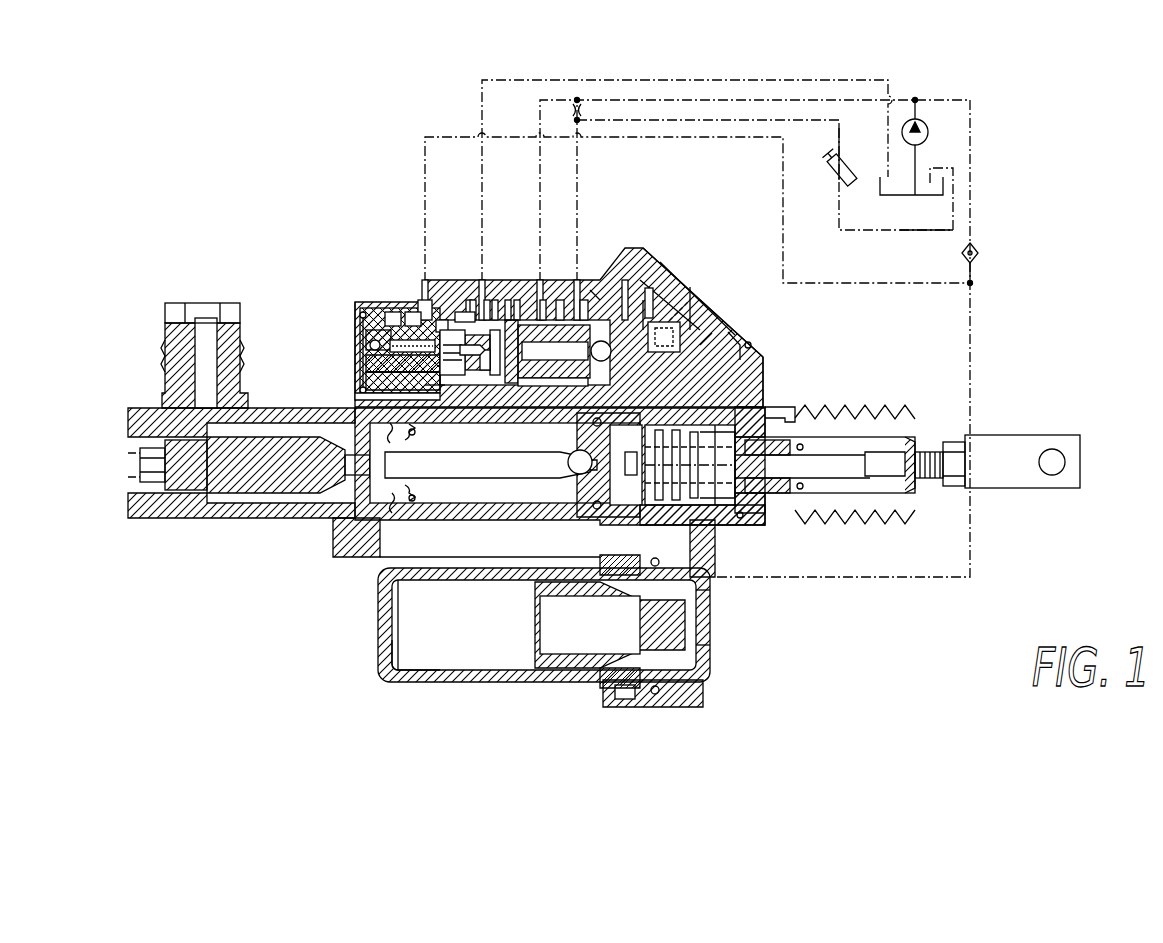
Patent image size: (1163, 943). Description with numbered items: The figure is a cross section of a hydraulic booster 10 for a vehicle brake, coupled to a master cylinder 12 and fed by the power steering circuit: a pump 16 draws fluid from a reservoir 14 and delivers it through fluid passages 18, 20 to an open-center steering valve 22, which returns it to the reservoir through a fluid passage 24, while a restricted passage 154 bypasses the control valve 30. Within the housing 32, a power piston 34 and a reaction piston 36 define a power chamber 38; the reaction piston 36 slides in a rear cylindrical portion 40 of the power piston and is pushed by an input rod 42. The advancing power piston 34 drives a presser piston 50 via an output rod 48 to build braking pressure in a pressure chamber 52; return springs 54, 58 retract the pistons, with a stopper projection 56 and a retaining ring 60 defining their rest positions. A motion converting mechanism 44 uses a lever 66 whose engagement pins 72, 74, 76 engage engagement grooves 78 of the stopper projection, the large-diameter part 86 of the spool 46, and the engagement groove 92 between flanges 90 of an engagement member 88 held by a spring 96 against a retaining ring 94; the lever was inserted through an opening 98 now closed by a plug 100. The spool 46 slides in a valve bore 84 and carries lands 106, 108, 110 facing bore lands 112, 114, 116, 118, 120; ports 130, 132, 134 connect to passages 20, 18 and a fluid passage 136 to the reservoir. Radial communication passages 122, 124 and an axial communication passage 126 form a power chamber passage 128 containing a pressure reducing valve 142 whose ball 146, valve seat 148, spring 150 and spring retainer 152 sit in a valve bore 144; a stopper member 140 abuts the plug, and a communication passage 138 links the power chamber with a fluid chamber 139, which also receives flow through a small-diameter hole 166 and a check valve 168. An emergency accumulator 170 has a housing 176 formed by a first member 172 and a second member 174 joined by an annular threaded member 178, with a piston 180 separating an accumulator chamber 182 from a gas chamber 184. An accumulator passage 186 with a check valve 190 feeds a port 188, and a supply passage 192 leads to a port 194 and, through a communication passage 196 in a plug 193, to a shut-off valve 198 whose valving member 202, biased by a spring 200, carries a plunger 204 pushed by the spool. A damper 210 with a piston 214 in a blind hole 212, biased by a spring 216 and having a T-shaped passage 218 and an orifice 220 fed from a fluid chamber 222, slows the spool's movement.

The hydraulic booster 10 is at (355, 572).
The master cylinder 12 is at (225, 538).
The reservoir 14 is at (888, 196).
The pump 16 is at (929, 132).
The fluid passage 18 is at (540, 113).
The fluid passage 20 is at (841, 133).
The steering valve 22 is at (828, 172).
The fluid passage 24 is at (905, 230).
The control valve 30 is at (523, 270).
The housing 32 is at (768, 515).
The power piston 34 is at (570, 513).
The reaction piston 36 is at (833, 497).
The power chamber 38 is at (767, 405).
The cylindrical portion 40 is at (883, 500).
The input rod 42 is at (900, 468).
The motion converting mechanism 44 is at (765, 372).
The spool 46 is at (602, 432).
The output rod 48 is at (443, 468).
The presser piston 50 is at (295, 473).
The pressure chamber 52 is at (148, 497).
The return spring 54 is at (418, 503).
The stopper projection 56 is at (718, 505).
The return spring 58 is at (165, 498).
The retaining ring 60 is at (390, 500).
The lever 66 is at (740, 345).
The engagement pins 72 is at (698, 505).
The engagement pins 74 is at (693, 295).
The engagement pins 76 is at (785, 413).
The engagement grooves 78 is at (678, 500).
The valve bore 84 is at (538, 395).
The large-diameter part 86 is at (604, 422).
The engagement member 88 is at (817, 413).
The radially outward flanges 90 is at (604, 558).
The engagement groove 92 is at (667, 515).
The retaining ring 94 is at (606, 506).
The spring 96 is at (800, 505).
The opening 98 is at (750, 345).
The plug 100 is at (710, 340).
The land 106 is at (597, 293).
The land 108 is at (506, 313).
The land 110 is at (490, 303).
The land 112 is at (625, 265).
The land 114 is at (560, 313).
The land 116 is at (517, 300).
The land 118 is at (508, 320).
The land 120 is at (473, 313).
The radial communication passage 122 is at (515, 373).
The radial communication passage 124 is at (657, 307).
The axial communication passage 126 is at (544, 360).
The power chamber passage 128 is at (530, 365).
The port 130 is at (583, 310).
The port 132 is at (543, 307).
The port 134 is at (487, 308).
The fluid passage 136 is at (648, 80).
The communication passage 138 is at (470, 307).
The fluid chamber 139 is at (437, 380).
The stopper member 140 is at (710, 327).
The pressure reducing valve 142 is at (668, 293).
The valve bore 144 is at (700, 262).
The ball 146 is at (650, 287).
The valve seat 148 is at (610, 365).
The spring 150 is at (703, 307).
The spring retainer 152 is at (690, 287).
The restricted passage 154 is at (584, 110).
The small-diameter hole 166 is at (487, 363).
The check valve 168 is at (483, 355).
The emergency accumulator 170 is at (753, 644).
The first member 172 is at (708, 614).
The second member 174 is at (425, 683).
The housing 176 is at (515, 689).
The annular threaded member 178 is at (603, 695).
The piston 180 is at (708, 650).
The accumulator chamber 182 is at (708, 678).
The gas chamber 184 is at (472, 670).
The accumulator passage 186 is at (972, 270).
The port 188 is at (713, 596).
The check valve 190 is at (978, 251).
The supply passage 192 is at (909, 284).
The plug 193 is at (367, 370).
The port 194 is at (423, 300).
The communication passage 196 is at (423, 317).
The shut-off valve 198 is at (354, 328).
The spring 200 is at (395, 318).
The valving member 202 is at (442, 320).
The plunger 204 is at (470, 317).
The damper 210 is at (372, 358).
The blind hole 212 is at (387, 352).
The piston 214 is at (363, 377).
The spring 216 is at (365, 357).
The T-shaped passage 218 is at (363, 388).
The orifice 220 is at (480, 363).
The fluid chamber 222 is at (363, 360).